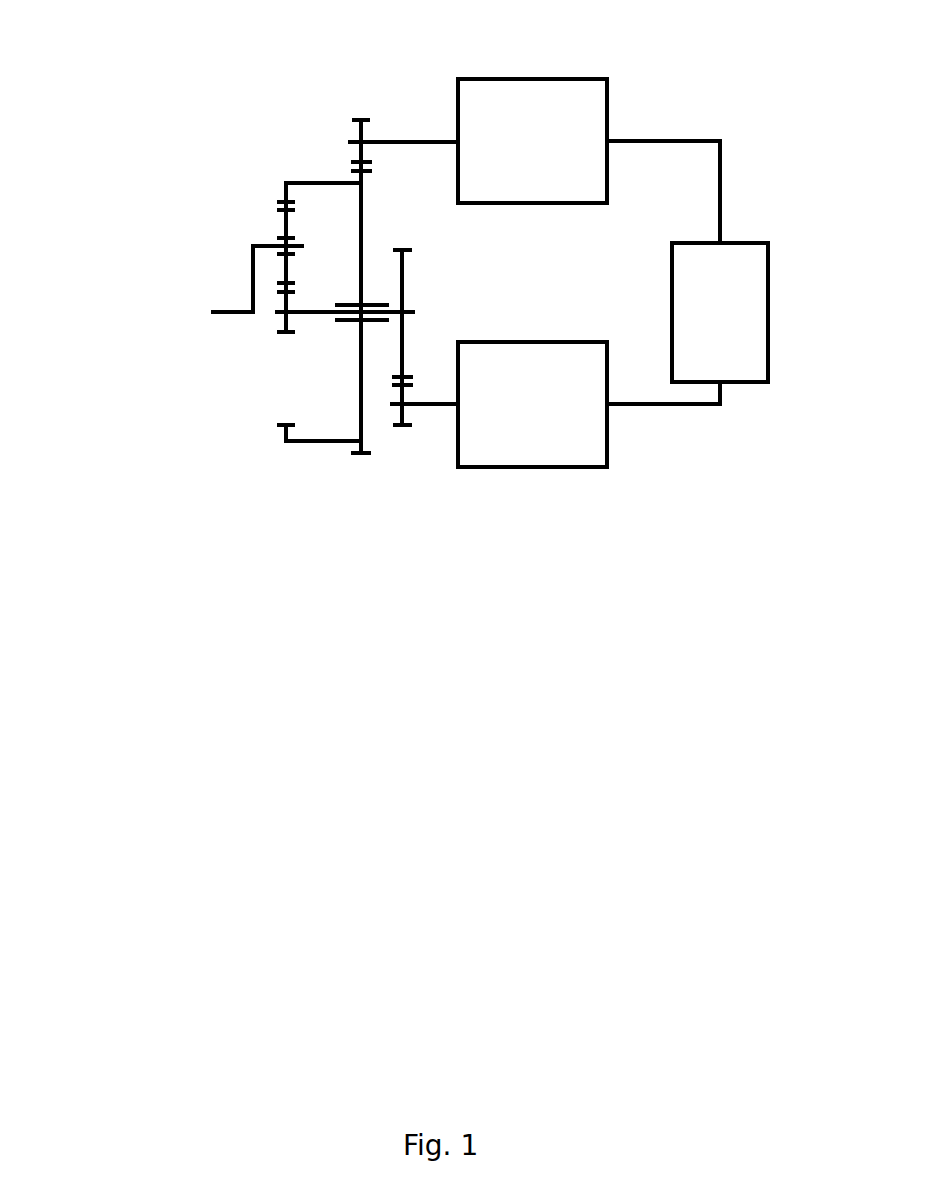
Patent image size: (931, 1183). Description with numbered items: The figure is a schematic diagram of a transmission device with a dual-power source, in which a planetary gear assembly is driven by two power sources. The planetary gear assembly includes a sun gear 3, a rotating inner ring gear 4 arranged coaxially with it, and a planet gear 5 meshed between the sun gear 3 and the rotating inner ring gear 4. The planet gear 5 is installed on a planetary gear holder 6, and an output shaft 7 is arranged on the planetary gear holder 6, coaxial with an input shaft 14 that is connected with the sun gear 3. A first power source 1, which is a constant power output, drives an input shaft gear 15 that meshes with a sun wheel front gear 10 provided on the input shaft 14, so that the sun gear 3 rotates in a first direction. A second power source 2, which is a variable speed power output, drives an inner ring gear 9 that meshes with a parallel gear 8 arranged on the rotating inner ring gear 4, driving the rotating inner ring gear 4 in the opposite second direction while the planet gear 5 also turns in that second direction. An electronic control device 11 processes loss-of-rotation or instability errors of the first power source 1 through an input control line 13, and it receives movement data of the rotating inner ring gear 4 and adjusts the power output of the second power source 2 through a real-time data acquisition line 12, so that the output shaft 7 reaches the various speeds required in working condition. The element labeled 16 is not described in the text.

The first power source 1 is at (540, 397).
The second power source 2 is at (512, 138).
The sun gear 3 is at (282, 335).
The rotating inner ring gear 4 is at (333, 444).
The planet gear 5 is at (276, 213).
The planetary gear holder 6 is at (252, 285).
The output shaft 7 is at (215, 310).
The parallel gear 8 is at (362, 448).
The inner ring gear 9 is at (356, 120).
The sun wheel front gear 10 is at (405, 250).
The electronic control device 11 is at (720, 293).
The real-time data acquisition line 12 is at (648, 140).
The input control line 13 is at (627, 410).
The input shaft 14 is at (325, 314).
The input shaft gear 15 is at (402, 427).
The gear pair 16 is at (282, 183).